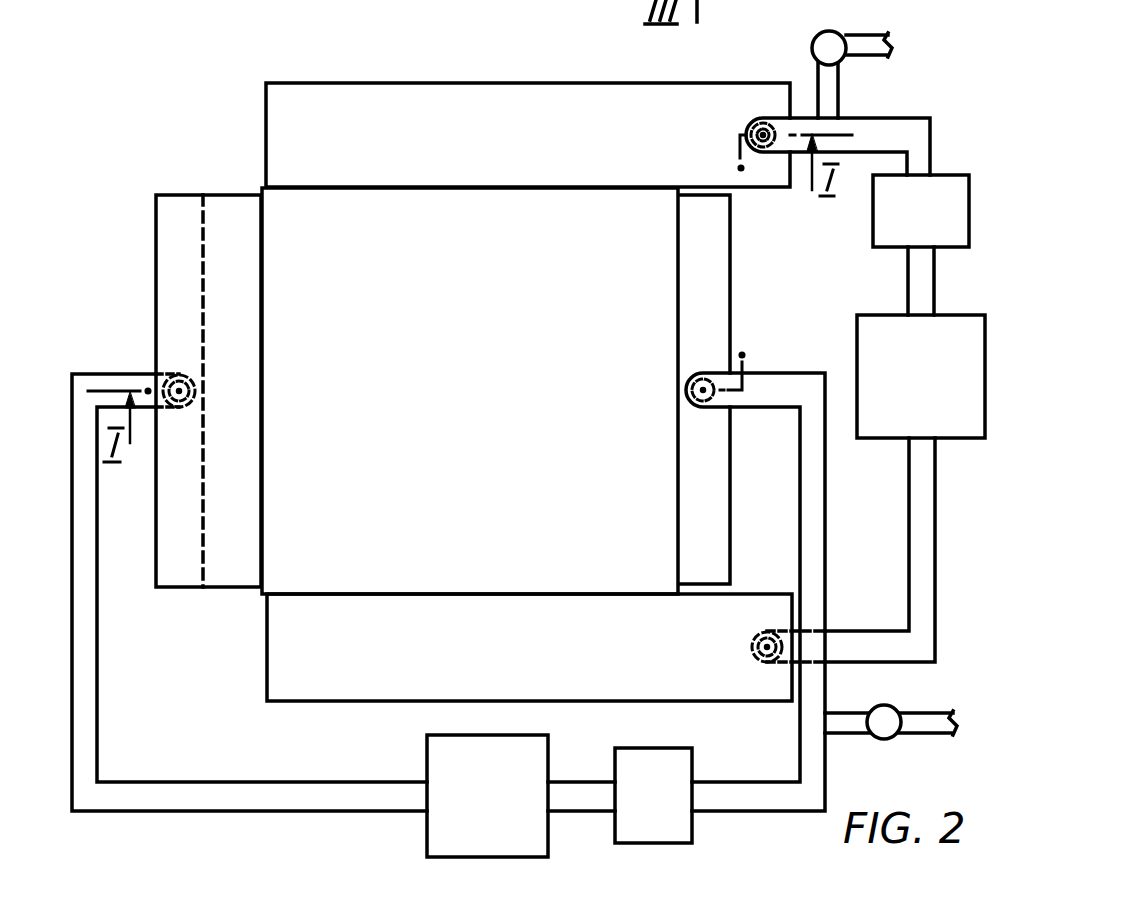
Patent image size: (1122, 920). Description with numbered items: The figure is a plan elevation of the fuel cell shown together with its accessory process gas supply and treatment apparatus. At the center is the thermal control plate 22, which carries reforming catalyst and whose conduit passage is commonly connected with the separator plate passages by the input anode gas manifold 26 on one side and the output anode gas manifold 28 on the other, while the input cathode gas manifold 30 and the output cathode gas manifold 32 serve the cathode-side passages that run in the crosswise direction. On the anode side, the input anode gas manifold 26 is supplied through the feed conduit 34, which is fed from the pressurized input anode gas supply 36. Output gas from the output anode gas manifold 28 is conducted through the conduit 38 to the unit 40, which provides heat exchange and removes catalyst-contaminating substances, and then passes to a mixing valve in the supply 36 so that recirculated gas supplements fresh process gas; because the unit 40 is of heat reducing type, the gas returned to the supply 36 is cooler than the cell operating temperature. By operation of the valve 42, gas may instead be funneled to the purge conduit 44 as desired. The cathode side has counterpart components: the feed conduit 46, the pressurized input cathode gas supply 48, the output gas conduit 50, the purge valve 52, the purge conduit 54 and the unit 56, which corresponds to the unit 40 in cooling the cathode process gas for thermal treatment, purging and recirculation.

The thermal control plate 22 is at (447, 362).
The input anode gas manifold 26 is at (229, 206).
The output anode gas manifold 28 is at (717, 328).
The input cathode gas manifold 30 is at (350, 688).
The output cathode gas manifold 32 is at (688, 95).
The feed conduit 34 is at (88, 373).
The pressurized input anode gas supply 36 is at (437, 828).
The conduit 38 is at (790, 372).
The unit 40 is at (674, 748).
The valve 42 is at (876, 738).
The purge conduit 44 is at (913, 710).
The feed conduit 46 is at (884, 612).
The pressurized input cathode gas supply 48 is at (963, 440).
The output gas conduit 50 is at (870, 117).
The purge valve 52 is at (827, 31).
The purge conduit 54 is at (878, 40).
The unit 56 is at (950, 177).